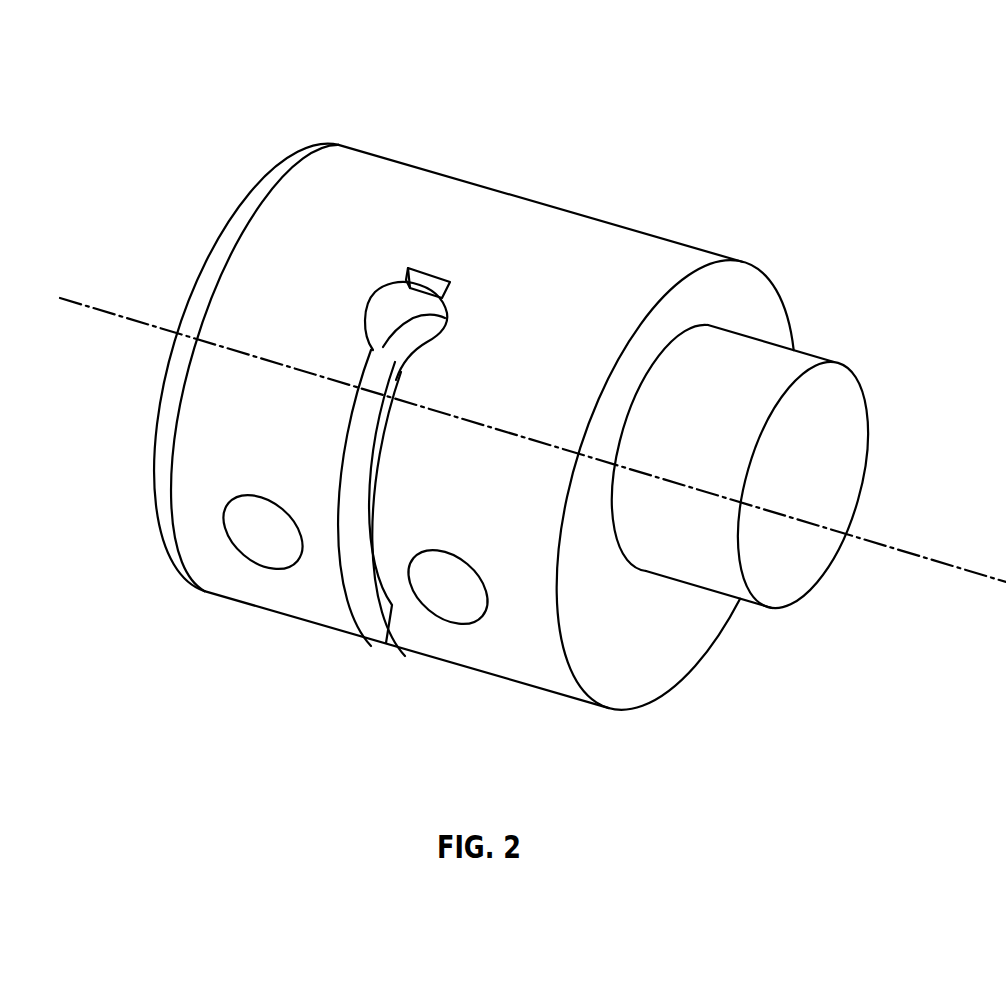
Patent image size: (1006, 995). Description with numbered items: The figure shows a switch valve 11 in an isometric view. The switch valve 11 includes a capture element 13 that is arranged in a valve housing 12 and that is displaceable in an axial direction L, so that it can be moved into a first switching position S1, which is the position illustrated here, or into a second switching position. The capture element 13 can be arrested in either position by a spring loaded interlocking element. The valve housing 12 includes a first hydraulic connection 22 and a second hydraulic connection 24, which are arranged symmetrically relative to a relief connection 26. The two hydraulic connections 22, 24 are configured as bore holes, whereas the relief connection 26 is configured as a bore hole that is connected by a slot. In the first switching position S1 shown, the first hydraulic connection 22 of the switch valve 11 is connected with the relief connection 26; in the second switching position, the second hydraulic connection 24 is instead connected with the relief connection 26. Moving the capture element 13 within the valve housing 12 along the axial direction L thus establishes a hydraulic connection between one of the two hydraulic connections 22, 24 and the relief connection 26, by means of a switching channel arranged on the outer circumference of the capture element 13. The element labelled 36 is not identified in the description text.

The switch valve 11 is at (856, 182).
The valve housing 12 is at (556, 192).
The capture element 13 is at (820, 545).
The first hydraulic connection 22 is at (450, 595).
The second hydraulic connection 24 is at (262, 540).
The relief connection 26 is at (388, 312).
The shoulder end face 36 is at (640, 393).
The first switching position S1 is at (729, 184).
The axial direction L is at (938, 563).